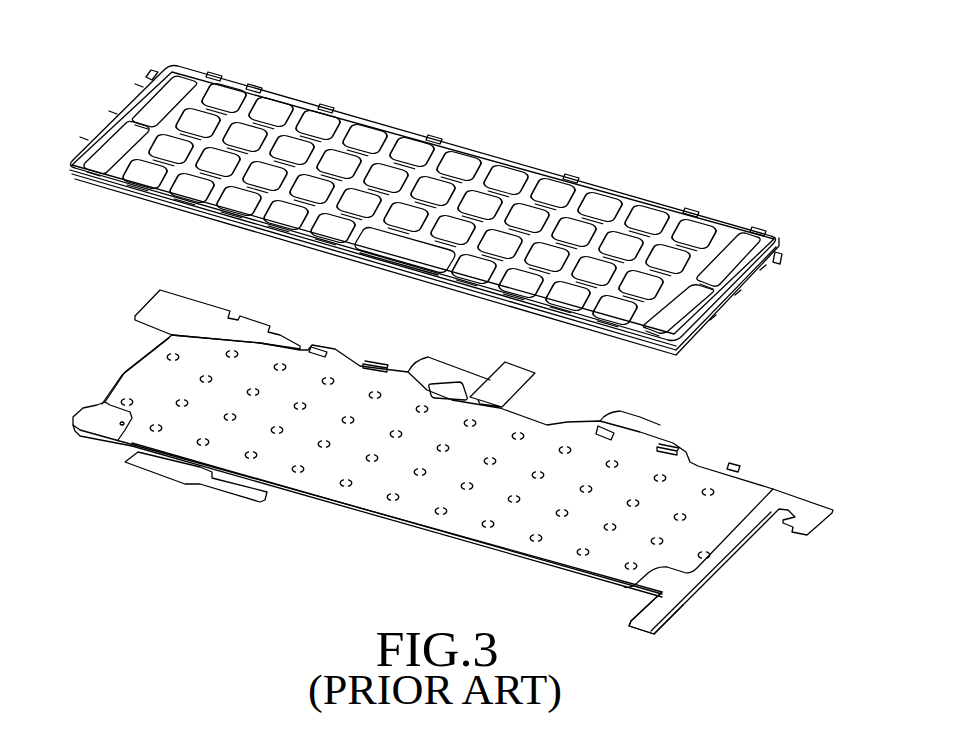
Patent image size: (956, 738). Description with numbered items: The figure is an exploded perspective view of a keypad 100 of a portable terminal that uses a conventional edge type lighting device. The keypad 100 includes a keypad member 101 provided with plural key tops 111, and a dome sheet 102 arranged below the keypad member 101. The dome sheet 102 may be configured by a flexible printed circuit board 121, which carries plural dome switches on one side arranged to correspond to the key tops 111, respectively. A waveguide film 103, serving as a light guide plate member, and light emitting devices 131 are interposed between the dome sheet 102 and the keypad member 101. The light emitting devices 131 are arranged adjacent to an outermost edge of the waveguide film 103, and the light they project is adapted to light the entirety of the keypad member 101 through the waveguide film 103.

The keypad 100 is at (356, 43).
The keypad member 101 is at (433, 179).
The key tops 111 is at (226, 95).
The dome sheet 102 is at (453, 476).
The light emitting devices 131 is at (376, 363).
The waveguide film 103 is at (713, 537).
The flexible printed circuit board 121 is at (663, 606).